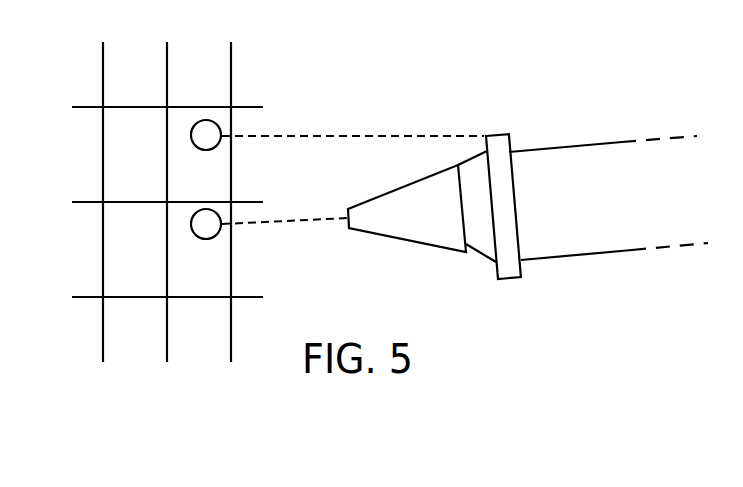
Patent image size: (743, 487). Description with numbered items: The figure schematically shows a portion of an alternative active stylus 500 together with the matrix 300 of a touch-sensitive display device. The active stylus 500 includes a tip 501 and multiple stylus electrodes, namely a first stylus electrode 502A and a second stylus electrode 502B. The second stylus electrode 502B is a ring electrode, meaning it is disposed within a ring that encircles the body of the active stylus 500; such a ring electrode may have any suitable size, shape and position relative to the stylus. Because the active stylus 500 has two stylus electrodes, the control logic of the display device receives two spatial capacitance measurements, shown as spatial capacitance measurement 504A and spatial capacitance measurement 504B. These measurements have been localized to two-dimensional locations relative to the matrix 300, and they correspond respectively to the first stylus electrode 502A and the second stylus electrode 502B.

The matrix 300 is at (132, 42).
The active stylus 500 is at (517, 155).
The tip 501 is at (396, 140).
The first stylus electrode 502A is at (397, 188).
The second stylus electrode 502B is at (495, 130).
The spatial capacitance measurement 504A is at (212, 210).
The spatial capacitance measurement 504B is at (215, 123).